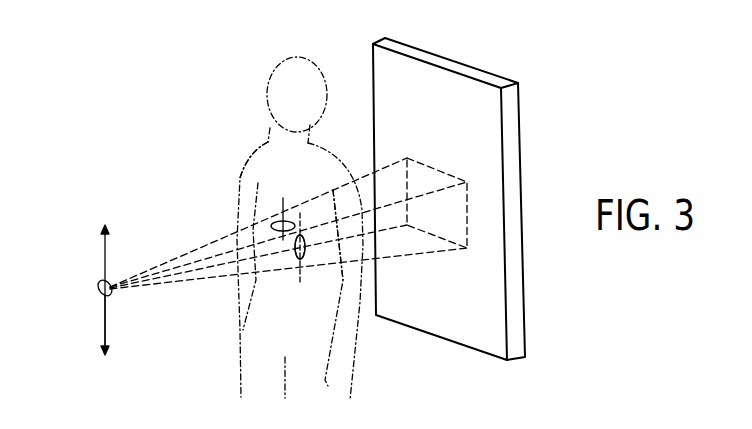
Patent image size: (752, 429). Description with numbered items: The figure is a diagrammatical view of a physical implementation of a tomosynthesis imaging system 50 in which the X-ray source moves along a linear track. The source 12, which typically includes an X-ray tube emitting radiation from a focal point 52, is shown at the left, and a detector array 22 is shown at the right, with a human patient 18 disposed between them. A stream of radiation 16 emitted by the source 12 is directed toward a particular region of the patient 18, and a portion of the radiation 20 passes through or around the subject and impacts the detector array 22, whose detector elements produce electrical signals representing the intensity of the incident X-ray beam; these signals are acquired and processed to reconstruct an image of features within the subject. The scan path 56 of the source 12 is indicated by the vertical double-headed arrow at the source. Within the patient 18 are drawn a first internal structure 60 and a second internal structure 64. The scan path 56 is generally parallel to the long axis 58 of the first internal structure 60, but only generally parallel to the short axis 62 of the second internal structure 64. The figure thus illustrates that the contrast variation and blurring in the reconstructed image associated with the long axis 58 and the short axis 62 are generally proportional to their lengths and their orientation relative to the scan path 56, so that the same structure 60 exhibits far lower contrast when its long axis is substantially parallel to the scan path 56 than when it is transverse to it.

The tomosynthesis imaging system 50 is at (116, 116).
The detector array 22 is at (458, 66).
The stream of radiation 16 is at (163, 262).
The human patient 18 is at (266, 138).
The portion of the radiation 20 is at (338, 183).
The short axis 62 is at (252, 169).
The second internal structure 64 is at (275, 217).
The long axis 58 is at (302, 263).
The first internal structure 60 is at (295, 258).
The scan path 56 is at (103, 262).
The focal point 52 is at (103, 298).
The X-ray source 12 is at (99, 292).